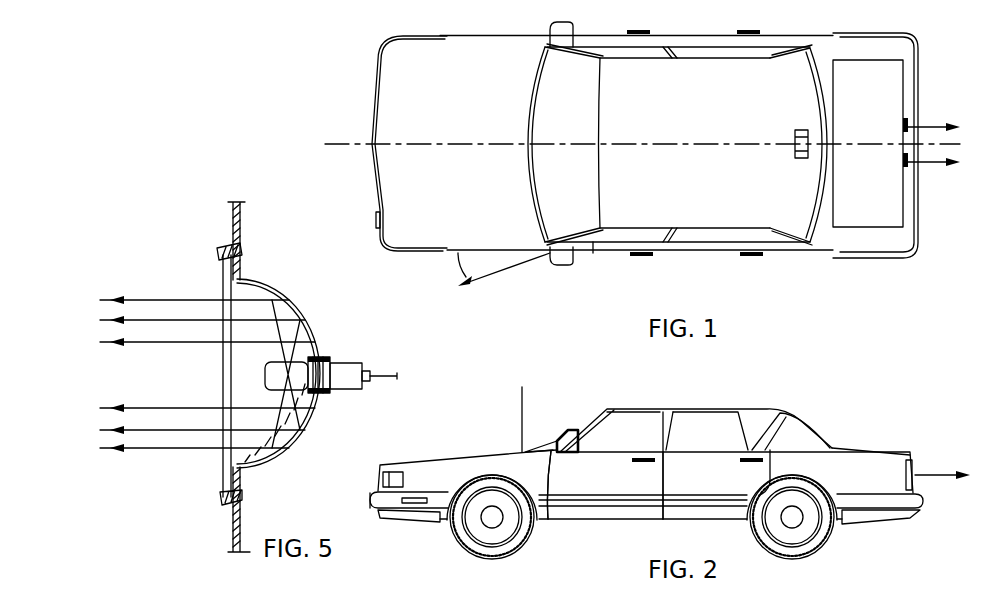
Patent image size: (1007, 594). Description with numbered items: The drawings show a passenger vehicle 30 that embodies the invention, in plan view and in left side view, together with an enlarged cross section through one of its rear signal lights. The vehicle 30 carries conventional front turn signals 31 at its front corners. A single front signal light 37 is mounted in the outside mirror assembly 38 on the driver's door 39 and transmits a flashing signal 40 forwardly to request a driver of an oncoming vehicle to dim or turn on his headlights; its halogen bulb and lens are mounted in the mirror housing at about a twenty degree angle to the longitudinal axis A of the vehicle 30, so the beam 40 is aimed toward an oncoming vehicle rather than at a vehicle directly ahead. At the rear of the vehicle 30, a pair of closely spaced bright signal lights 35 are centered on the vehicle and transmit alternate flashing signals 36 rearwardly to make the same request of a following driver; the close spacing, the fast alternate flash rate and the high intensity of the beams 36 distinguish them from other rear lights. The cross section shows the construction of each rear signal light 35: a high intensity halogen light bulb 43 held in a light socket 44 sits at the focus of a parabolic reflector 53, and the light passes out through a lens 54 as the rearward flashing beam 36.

In FIG. 1, the passenger vehicle 30 is at (784, 258).
In FIG. 2, the passenger vehicle 30 is at (720, 407).
In FIG. 1, the front turn signals 31 is at (376, 220).
In FIG. 2, the front turn signals 31 is at (372, 503).
In FIG. 1, the bright signal lights 35 is at (910, 120).
In FIG. 2, the bright signal lights 35 is at (917, 470).
In FIG. 5, the bright signal lights 35 is at (227, 503).
In FIG. 1, the flashing signals 36 is at (927, 116).
In FIG. 2, the flashing signals 36 is at (935, 478).
In FIG. 5, the flashing signals 36 is at (130, 298).
In FIG. 1, the signal light 37 is at (547, 256).
In FIG. 2, the signal light 37 is at (555, 441).
In FIG. 2, the outside mirror assembly 38 is at (568, 453).
In FIG. 1, the driver's door 39 is at (591, 253).
In FIG. 2, the driver's door 39 is at (627, 487).
In FIG. 2, the flashing signal 40 is at (500, 445).
In FIG. 5, the high intensity halogen light bulb 43 is at (312, 342).
In FIG. 5, the light socket 44 is at (342, 390).
In FIG. 5, the parabolic reflector 53 is at (287, 300).
In FIG. 5, the lens 54 is at (222, 373).
In FIG. 1, the longitudinal axis A is at (443, 147).